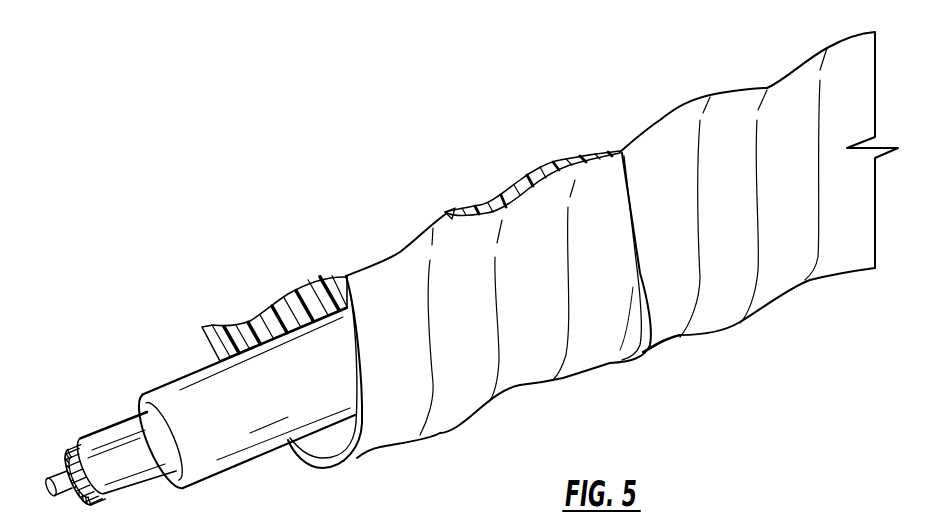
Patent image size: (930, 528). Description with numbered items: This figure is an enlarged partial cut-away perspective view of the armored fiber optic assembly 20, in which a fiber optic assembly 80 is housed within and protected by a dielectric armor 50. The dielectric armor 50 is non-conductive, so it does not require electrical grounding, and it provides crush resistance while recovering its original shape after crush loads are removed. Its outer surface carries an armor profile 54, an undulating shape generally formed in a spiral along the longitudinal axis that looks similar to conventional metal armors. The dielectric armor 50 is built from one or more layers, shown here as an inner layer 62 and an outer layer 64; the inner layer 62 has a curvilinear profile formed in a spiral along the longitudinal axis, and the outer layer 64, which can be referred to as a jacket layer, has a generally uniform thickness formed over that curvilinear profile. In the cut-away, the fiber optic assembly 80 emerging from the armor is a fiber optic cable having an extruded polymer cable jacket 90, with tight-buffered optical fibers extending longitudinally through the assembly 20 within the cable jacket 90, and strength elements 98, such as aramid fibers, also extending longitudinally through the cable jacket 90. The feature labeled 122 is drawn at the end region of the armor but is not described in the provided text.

The armored fiber optic assembly 20 is at (244, 324).
The dielectric armor 50 is at (550, 250).
The armor profile 54 is at (698, 98).
The inner layer 62 is at (305, 281).
The outer layer 64 is at (508, 188).
The fiber optic assembly 80 is at (160, 383).
The cable jacket 90 is at (108, 427).
The strength elements 98 is at (76, 450).
The boot end 122 is at (700, 337).